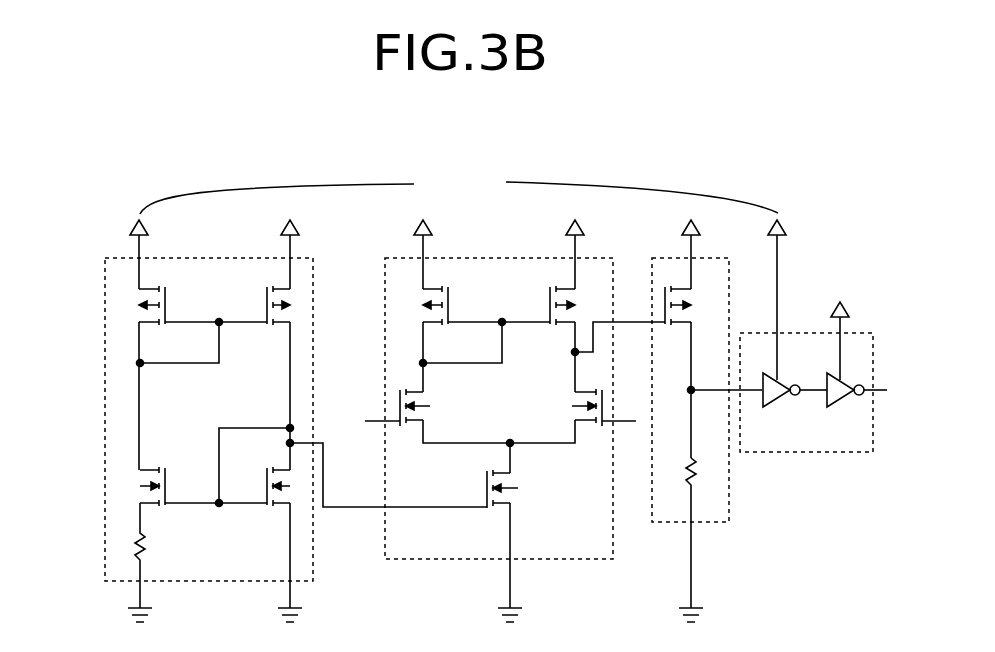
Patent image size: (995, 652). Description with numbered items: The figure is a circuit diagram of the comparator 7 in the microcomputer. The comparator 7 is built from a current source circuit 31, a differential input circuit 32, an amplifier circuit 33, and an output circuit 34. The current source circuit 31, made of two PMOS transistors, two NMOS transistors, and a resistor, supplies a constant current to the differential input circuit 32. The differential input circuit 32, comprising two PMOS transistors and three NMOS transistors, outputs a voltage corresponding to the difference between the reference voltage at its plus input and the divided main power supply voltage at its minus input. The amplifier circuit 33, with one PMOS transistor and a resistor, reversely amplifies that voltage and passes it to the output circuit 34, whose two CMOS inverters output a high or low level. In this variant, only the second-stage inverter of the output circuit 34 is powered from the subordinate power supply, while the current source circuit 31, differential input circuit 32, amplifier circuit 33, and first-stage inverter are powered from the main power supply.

The comparator 7 is at (753, 552).
The current source circuit 31 is at (105, 298).
The differential input circuit 32 is at (385, 294).
The amplifier circuit 33 is at (652, 278).
The output circuit 34 is at (820, 452).